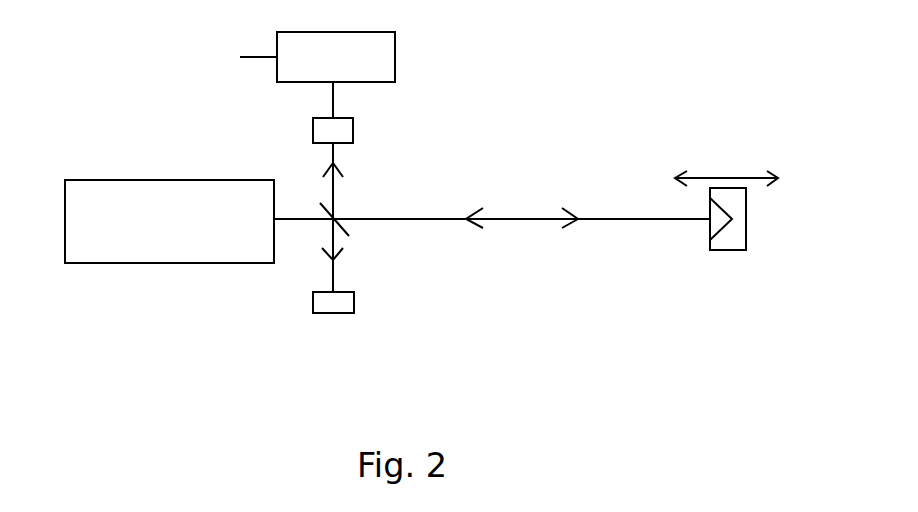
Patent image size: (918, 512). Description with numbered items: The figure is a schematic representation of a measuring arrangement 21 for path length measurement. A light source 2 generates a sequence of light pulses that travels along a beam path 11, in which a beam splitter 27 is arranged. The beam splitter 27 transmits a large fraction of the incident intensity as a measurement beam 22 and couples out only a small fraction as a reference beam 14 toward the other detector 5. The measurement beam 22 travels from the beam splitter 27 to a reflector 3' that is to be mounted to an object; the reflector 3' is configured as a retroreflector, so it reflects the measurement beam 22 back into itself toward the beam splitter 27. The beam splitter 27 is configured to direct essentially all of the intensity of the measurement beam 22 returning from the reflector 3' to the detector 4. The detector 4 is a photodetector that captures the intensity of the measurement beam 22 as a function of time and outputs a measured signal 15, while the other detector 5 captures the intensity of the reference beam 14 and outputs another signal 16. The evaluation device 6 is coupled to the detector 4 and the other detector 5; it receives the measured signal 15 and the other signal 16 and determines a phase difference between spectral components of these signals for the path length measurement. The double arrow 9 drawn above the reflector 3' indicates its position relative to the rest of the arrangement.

The light source 2 is at (126, 179).
The evaluation device 6 is at (393, 43).
The other signal 16 is at (259, 57).
The measured signal 15 is at (333, 100).
The detector 4 is at (352, 135).
The beam path 11 is at (293, 219).
The beam splitter 27 is at (347, 234).
The reference beam 14 is at (331, 270).
The other detector 5 is at (313, 307).
The measurement beam 22 is at (551, 219).
The movement direction 9 is at (726, 178).
The reflector 3' is at (730, 253).
The measuring arrangement 21 is at (590, 77).